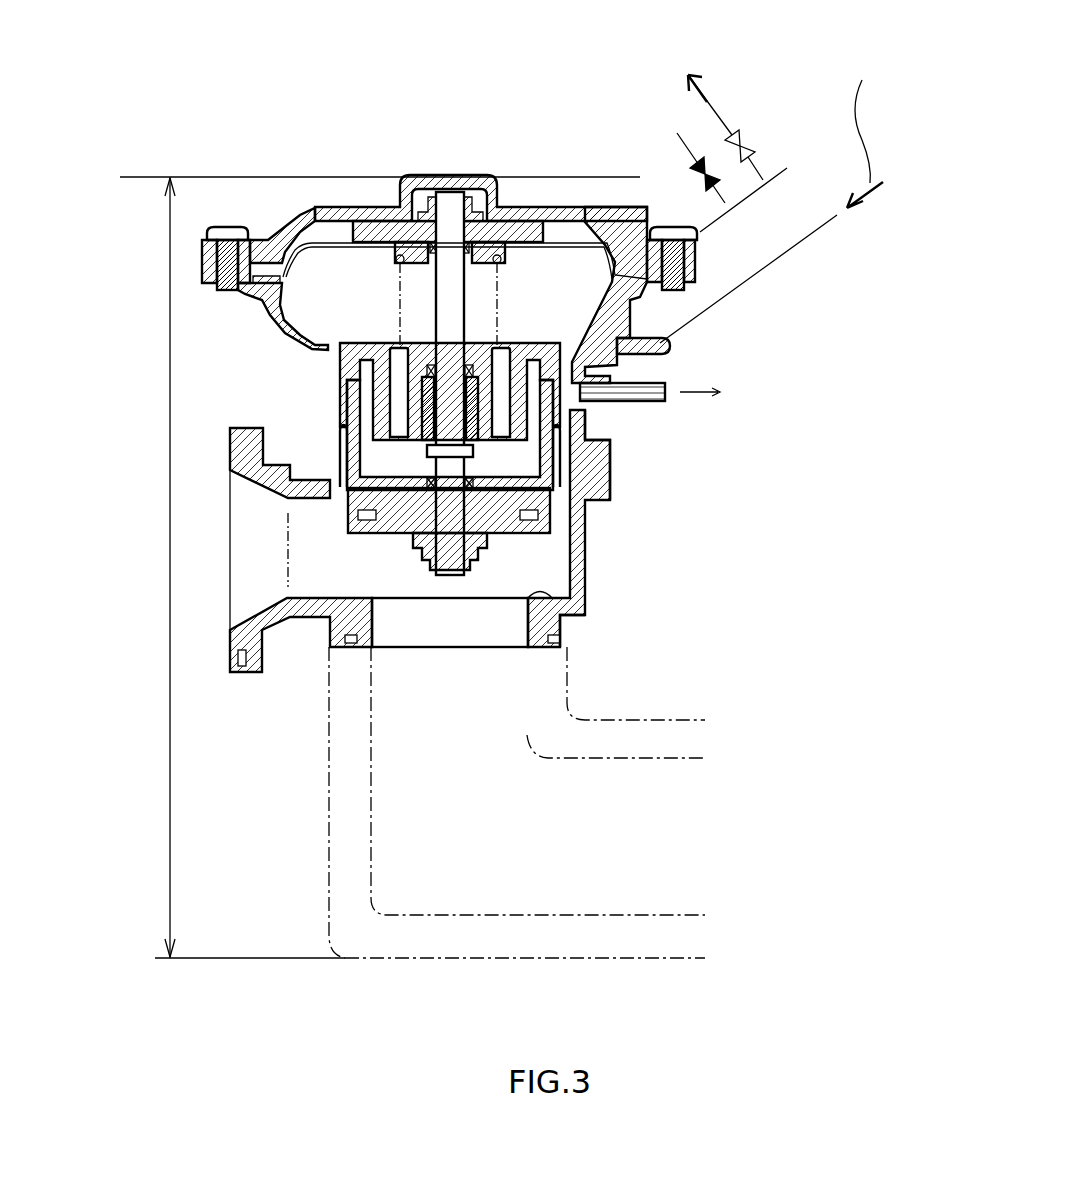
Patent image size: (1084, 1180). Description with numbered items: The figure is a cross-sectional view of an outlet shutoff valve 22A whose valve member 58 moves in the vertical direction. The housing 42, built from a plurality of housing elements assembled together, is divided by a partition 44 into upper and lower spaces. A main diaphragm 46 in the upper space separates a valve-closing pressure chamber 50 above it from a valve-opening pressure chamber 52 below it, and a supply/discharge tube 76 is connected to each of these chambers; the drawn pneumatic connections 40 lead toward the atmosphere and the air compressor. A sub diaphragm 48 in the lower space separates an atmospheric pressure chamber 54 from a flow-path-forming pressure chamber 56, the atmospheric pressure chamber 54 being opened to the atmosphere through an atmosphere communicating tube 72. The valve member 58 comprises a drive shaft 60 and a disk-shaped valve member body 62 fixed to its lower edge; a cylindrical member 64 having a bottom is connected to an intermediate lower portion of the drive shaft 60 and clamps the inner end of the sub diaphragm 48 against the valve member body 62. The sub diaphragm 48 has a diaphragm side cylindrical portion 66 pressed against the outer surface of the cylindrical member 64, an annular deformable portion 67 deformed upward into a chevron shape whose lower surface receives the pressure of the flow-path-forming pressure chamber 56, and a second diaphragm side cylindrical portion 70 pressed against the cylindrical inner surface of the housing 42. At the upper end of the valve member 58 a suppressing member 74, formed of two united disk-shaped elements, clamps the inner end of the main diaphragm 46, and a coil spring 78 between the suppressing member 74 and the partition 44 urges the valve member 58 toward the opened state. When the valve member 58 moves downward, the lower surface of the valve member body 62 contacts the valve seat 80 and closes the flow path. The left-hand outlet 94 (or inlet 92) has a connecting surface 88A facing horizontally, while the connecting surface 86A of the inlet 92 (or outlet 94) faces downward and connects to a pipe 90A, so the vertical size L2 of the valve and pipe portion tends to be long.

The outlet shutoff valve 22A is at (470, 135).
The pneumatic pipes 40 is at (728, 207).
The housing 42 is at (585, 545).
The partition 44 is at (352, 355).
The main diaphragm 46 is at (335, 240).
The sub diaphragm 48 is at (585, 420).
The valve-closing pressure chamber 50 is at (290, 215).
The valve-opening pressure chamber 52 is at (300, 320).
The atmospheric pressure chamber 54 is at (335, 395).
The flow-path-forming pressure chamber 56 is at (540, 570).
The valve member 58 is at (453, 565).
The drive shaft 60 is at (458, 303).
The valve member body 62 is at (375, 535).
The cylindrical member 64 is at (330, 395).
The diaphragm side cylindrical portion 66 is at (600, 465).
The annular deformable portion 67 is at (340, 492).
The second diaphragm side cylindrical portion 70 is at (590, 455).
The atmosphere communicating tube 72 is at (625, 390).
The suppressing member 74 is at (365, 225).
The supply/discharge tube 76 is at (655, 216).
The coil spring 78 is at (500, 308).
The valve seat 80 is at (575, 620).
The connecting surface 86A is at (540, 647).
The connecting surface 88A is at (235, 660).
The pipe 90A is at (613, 915).
The inlet 92 is at (372, 645).
The outlet 94 is at (292, 602).
The size in the vertical direction L2 is at (172, 738).